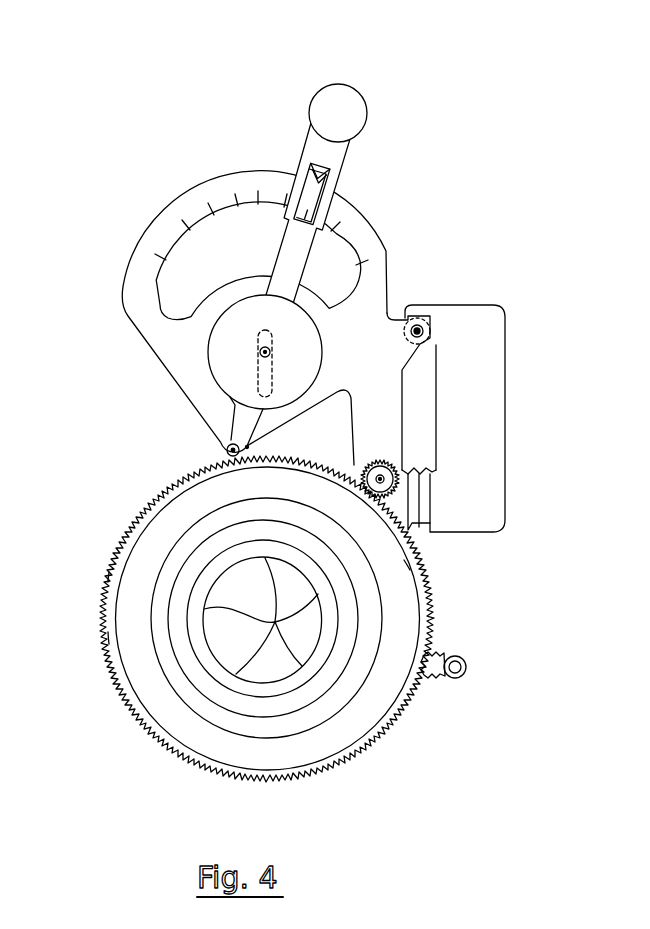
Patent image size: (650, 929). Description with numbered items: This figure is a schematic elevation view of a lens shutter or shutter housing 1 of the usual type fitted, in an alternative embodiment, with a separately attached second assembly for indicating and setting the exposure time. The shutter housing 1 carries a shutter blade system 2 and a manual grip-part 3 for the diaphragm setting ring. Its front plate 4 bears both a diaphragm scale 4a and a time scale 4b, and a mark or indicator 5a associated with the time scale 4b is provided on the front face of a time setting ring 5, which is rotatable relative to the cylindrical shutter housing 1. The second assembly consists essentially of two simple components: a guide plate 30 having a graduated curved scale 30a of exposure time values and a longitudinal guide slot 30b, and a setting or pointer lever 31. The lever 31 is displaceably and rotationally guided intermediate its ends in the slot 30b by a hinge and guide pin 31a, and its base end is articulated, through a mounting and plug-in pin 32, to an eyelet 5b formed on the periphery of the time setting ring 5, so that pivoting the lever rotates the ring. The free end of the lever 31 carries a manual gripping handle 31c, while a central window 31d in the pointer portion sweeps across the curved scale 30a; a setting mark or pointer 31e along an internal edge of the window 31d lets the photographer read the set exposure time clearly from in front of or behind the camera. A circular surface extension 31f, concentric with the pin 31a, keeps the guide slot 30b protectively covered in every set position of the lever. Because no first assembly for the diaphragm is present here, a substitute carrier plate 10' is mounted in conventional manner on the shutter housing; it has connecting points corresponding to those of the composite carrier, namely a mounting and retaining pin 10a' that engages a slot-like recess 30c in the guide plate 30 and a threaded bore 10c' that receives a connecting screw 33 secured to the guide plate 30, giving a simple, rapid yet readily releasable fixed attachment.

The shutter housing 1 is at (185, 695).
The shutter blade system 2 is at (220, 587).
The manual grip-part 3 is at (431, 672).
The front plate 4 is at (190, 500).
The diaphragm scale 4a is at (407, 565).
The time scale 4b is at (105, 577).
The time setting ring 5 is at (105, 603).
The indicator 5a is at (107, 638).
The eyelet 5b is at (226, 450).
The substitute carrier plate 10' is at (517, 418).
The pivot bearing 10a' is at (383, 351).
The gear shaft 10c' is at (341, 491).
The guide plate 30 is at (152, 318).
The graduated curved scale 30a is at (192, 208).
The guide slot 30b is at (272, 375).
The slot-like recess 30c is at (410, 332).
The pointer lever 31 is at (302, 243).
The hinge and guide pin 31a is at (270, 352).
The manual gripping handle 31c is at (353, 105).
The central window 31d is at (328, 183).
The setting mark 31e is at (318, 168).
The surface extension 31f is at (228, 357).
The mounting and plug-in pin 32 is at (249, 448).
The connecting screw 33 is at (373, 468).